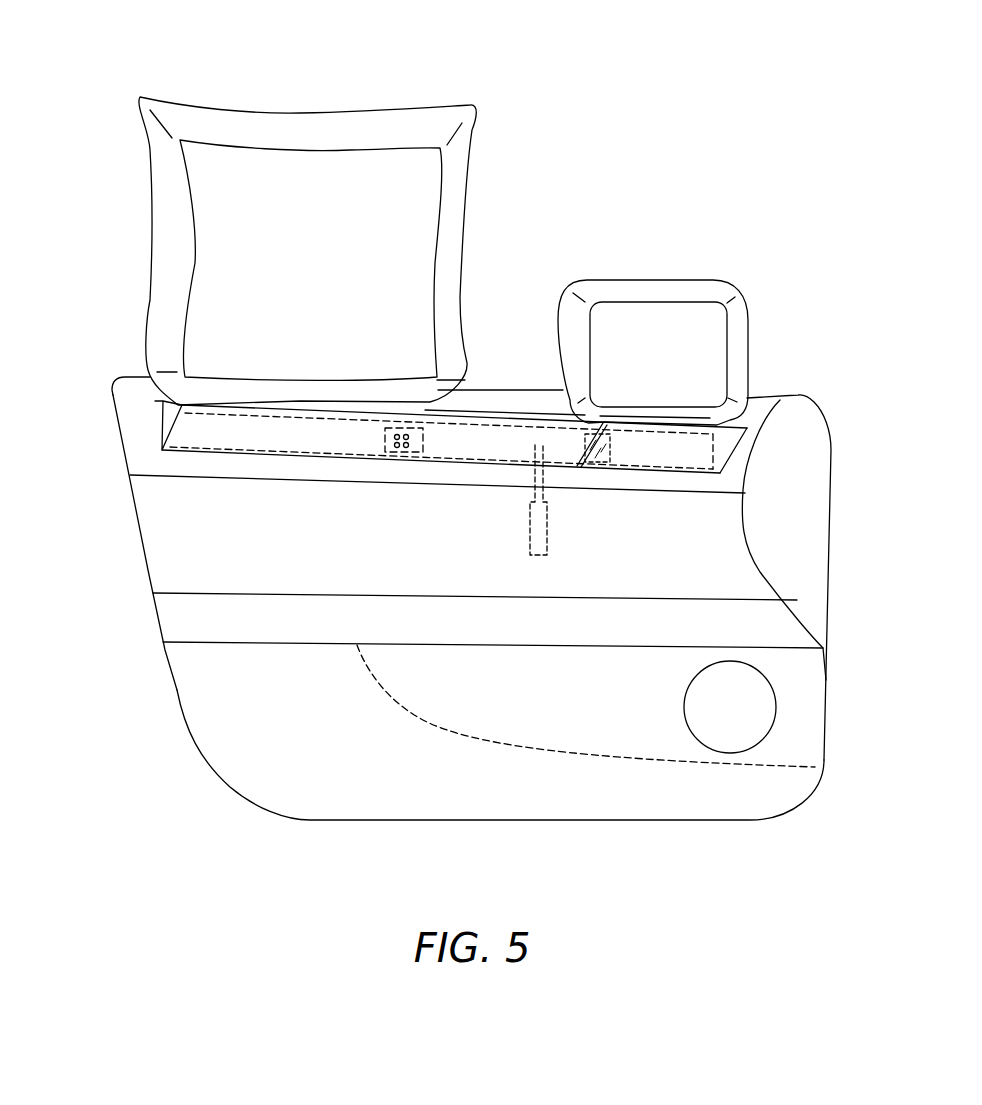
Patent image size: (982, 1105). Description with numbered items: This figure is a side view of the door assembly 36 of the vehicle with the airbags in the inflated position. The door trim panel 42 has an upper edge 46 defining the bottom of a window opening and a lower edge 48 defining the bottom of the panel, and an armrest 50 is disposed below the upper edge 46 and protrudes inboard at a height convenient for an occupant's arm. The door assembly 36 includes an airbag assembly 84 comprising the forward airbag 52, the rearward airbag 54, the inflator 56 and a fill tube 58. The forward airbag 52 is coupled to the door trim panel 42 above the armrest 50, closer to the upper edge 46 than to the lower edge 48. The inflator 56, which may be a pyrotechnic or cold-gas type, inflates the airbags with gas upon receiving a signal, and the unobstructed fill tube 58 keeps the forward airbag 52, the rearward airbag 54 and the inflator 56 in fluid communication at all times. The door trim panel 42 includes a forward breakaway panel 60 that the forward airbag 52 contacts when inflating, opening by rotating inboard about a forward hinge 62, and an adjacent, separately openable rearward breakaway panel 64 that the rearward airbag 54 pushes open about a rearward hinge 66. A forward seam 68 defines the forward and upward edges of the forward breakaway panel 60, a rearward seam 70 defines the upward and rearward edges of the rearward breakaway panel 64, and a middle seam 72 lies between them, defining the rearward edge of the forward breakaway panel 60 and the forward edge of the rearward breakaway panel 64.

The door assembly 36 is at (123, 642).
The door trim panel 42 is at (135, 520).
The upper edge 46 is at (497, 389).
The lower edge 48 is at (363, 820).
The armrest 50 is at (620, 595).
The forward airbag 52 is at (677, 280).
The rearward airbag 54 is at (312, 112).
The inflator 56 is at (548, 515).
The fill tube 58 is at (483, 452).
The forward breakaway panel 60 is at (737, 447).
The forward hinge 62 is at (668, 470).
The rearward breakaway panel 64 is at (300, 403).
The rearward hinge 66 is at (322, 452).
The forward seam 68 is at (690, 425).
The rearward seam 70 is at (183, 403).
The middle seam 72 is at (590, 437).
The airbag assembly 84 is at (152, 421).